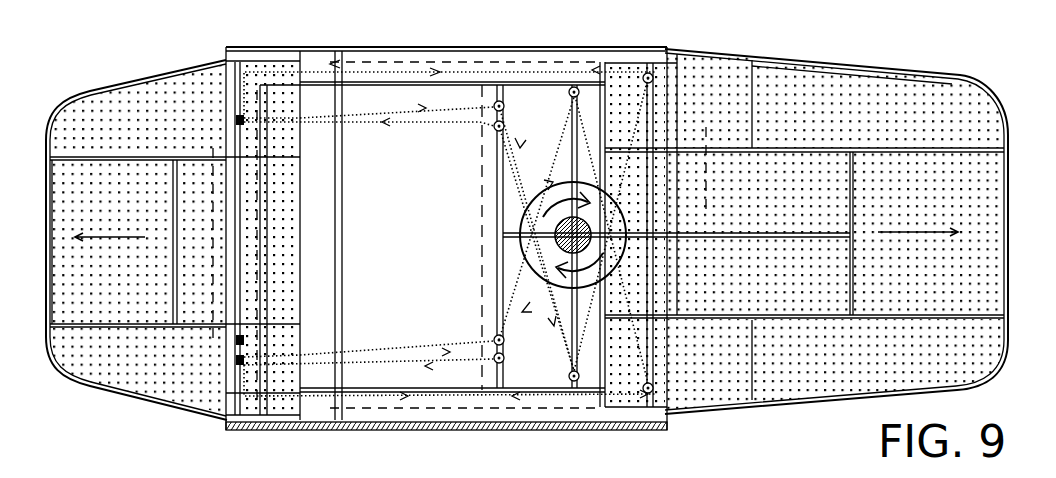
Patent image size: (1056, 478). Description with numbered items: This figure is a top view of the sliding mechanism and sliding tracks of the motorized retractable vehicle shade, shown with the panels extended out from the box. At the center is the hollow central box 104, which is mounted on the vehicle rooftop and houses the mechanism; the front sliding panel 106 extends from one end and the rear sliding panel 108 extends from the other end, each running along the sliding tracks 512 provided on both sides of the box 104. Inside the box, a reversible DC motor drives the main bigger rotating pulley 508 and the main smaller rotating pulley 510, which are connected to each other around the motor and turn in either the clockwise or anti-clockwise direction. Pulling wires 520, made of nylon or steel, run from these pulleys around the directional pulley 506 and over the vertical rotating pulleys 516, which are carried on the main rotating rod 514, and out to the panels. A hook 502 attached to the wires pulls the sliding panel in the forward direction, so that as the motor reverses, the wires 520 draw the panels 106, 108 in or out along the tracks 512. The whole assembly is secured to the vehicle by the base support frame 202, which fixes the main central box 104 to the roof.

The hollow central box 104 is at (405, 252).
The front sliding panel 106 is at (882, 70).
The rear sliding panel 108 is at (100, 88).
The base support frame 202 is at (569, 321).
The hook 502 is at (600, 400).
The directional pulley 506 is at (574, 379).
The main bigger rotating pulley 508 is at (521, 216).
The main smaller rotating pulley 510 is at (537, 247).
The sliding track 512 is at (365, 431).
The main rotating rod 514 is at (222, 119).
The vertical rotating pulley 516 is at (228, 74).
The pulling wire 520 is at (375, 365).